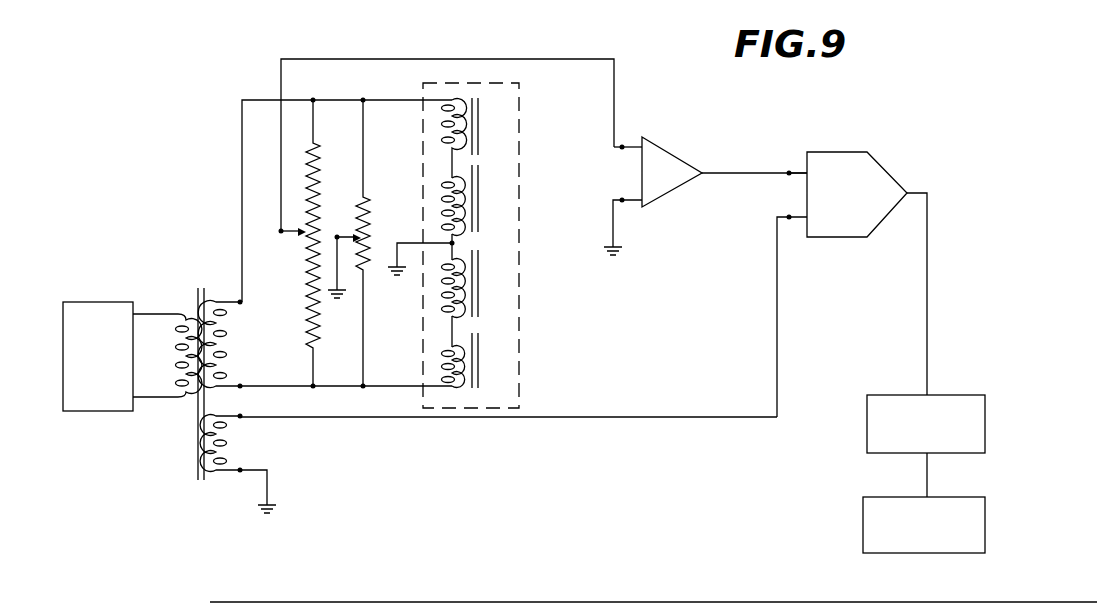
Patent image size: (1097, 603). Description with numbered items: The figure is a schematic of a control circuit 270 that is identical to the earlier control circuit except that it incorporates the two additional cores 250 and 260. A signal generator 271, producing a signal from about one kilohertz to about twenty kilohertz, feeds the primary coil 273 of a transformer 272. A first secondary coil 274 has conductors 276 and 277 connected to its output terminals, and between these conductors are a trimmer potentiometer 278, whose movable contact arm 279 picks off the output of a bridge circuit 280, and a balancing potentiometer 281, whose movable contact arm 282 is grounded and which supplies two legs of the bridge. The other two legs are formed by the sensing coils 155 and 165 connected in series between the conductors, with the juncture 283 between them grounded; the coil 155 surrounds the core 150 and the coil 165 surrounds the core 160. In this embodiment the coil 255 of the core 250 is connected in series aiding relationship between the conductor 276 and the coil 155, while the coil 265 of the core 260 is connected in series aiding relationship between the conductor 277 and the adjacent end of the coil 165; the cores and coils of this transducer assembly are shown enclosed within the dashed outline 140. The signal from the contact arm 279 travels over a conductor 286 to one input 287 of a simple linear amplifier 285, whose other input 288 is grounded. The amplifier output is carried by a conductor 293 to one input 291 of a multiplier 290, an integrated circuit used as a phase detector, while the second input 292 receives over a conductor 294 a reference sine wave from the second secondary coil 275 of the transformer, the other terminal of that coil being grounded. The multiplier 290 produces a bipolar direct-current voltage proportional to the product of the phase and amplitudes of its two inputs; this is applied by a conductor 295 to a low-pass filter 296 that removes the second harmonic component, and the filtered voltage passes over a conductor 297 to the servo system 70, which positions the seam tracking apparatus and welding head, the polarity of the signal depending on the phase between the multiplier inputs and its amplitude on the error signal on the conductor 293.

The control circuit 270 is at (128, 88).
The signal generator 271 is at (108, 302).
The transformer 272 is at (188, 430).
The primary coil 273 is at (172, 365).
The first secondary coil 274 is at (233, 341).
The second secondary coil 275 is at (236, 449).
The conductor 276 is at (240, 152).
The conductor 277 is at (268, 389).
The trimmer potentiometer 278 is at (319, 186).
The movable contact arm 279 is at (296, 235).
The bridge circuit 280 is at (396, 90).
The balancing potentiometer 281 is at (371, 208).
The movable contact arm 282 is at (337, 234).
The juncture 283 is at (456, 243).
The conductor 286 is at (402, 59).
The transducer assembly 140 is at (523, 140).
The coil 255 is at (446, 203).
The coil 155 is at (446, 184).
The coil 165 is at (446, 300).
The coil 265 is at (447, 351).
The core 250 is at (488, 110).
The core 150 is at (488, 179).
The core 160 is at (488, 260).
The core 260 is at (490, 338).
The amplifier 285 is at (672, 154).
The amplifier input 287 is at (633, 146).
The amplifier input 288 is at (645, 205).
The conductor 293 is at (722, 173).
The multiplier 290 is at (868, 152).
The multiplier input 291 is at (800, 172).
The multiplier input 292 is at (800, 222).
The conductor 294 is at (585, 418).
The conductor 295 is at (928, 262).
The low-pass filter 296 is at (866, 430).
The conductor 297 is at (926, 474).
The servo system 70 is at (863, 530).